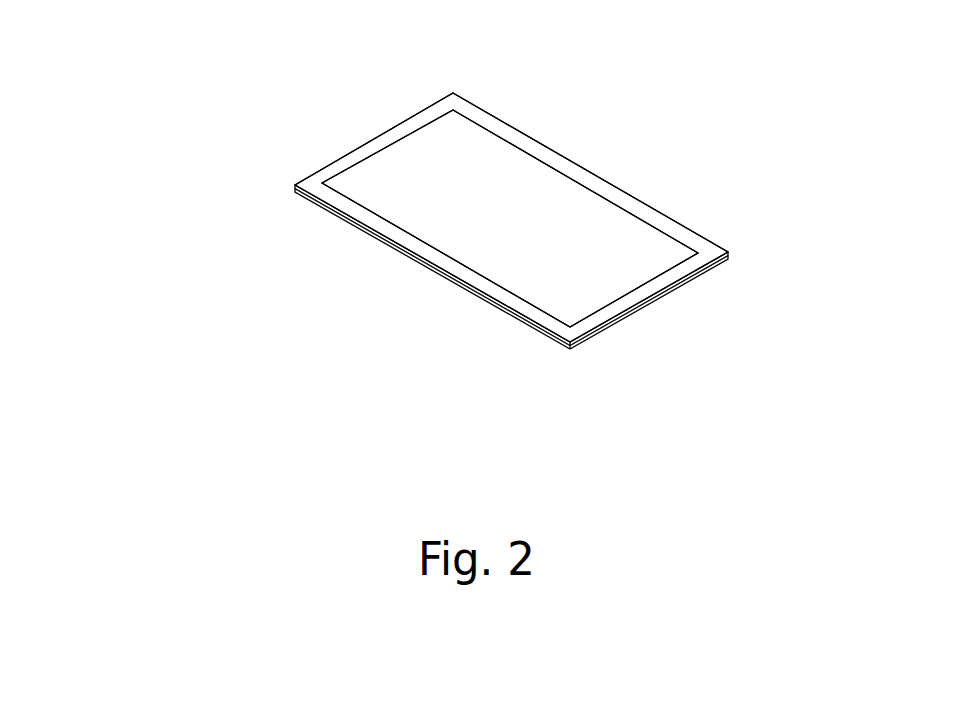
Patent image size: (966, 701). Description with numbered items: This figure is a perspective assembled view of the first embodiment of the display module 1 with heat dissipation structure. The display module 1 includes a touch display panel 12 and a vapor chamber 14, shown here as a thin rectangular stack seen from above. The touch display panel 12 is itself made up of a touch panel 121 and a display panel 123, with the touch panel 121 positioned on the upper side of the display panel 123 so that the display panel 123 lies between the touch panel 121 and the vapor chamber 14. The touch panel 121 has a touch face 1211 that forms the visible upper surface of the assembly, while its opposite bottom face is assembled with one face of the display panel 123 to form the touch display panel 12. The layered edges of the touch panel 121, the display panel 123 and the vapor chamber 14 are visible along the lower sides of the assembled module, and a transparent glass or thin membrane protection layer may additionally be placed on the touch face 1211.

The display module 1 is at (806, 63).
The touch display panel 12 is at (173, 152).
The touch panel 121 is at (295, 186).
The display panel 123 is at (295, 190).
The touch face 1211 is at (415, 145).
The vapor chamber 14 is at (728, 253).